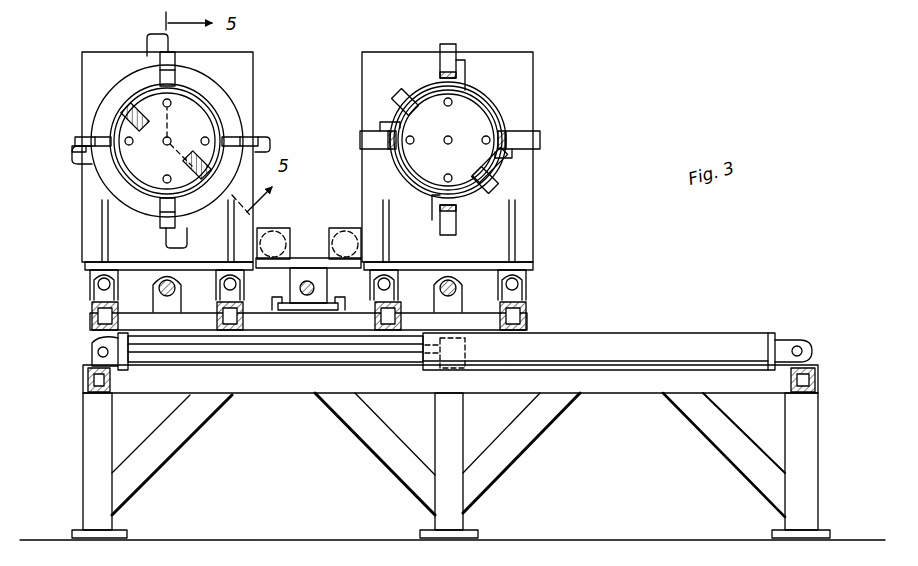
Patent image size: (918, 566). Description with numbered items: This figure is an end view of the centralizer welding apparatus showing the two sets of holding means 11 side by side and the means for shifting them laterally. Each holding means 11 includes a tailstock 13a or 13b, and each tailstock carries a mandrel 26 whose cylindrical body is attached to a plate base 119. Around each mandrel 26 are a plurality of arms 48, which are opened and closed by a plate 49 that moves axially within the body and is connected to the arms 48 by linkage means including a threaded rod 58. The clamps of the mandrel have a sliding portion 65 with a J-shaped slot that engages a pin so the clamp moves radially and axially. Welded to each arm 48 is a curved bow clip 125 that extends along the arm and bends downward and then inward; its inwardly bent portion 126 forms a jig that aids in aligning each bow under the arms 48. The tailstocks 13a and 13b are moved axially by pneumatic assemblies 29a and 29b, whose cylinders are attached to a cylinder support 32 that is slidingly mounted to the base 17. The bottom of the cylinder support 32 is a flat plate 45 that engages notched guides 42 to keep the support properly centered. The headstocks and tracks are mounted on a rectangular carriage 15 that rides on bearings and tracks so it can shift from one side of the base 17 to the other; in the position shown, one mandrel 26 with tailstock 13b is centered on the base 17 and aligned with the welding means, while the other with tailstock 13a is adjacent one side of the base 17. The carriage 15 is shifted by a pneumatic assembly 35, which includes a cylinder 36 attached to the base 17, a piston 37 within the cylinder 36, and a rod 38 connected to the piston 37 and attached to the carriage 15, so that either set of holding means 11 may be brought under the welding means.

The holding means 11 is at (318, 57).
The tailstock 13a is at (257, 52).
The tailstock 13b is at (538, 52).
The mandrel 26 is at (112, 82).
The arm 48 is at (92, 138).
The plate 49 is at (167, 141).
The threaded rod 58 is at (167, 178).
The sliding portion 65 is at (492, 188).
The plate base 119 is at (222, 98).
The curved bow clip 125 is at (74, 150).
The inwardly bent portion 126 is at (74, 164).
The pneumatic assembly 29a is at (270, 228).
The pneumatic assembly 29b is at (340, 228).
The cylinder support 32 is at (304, 258).
The notched guide 42 is at (280, 297).
The carriage 15 is at (90, 316).
The flat plate 45 is at (308, 332).
The rod 38 is at (228, 364).
The pneumatic assembly 35 is at (556, 330).
The cylinder 36 is at (660, 333).
The piston 37 is at (465, 352).
The base 17 is at (822, 370).